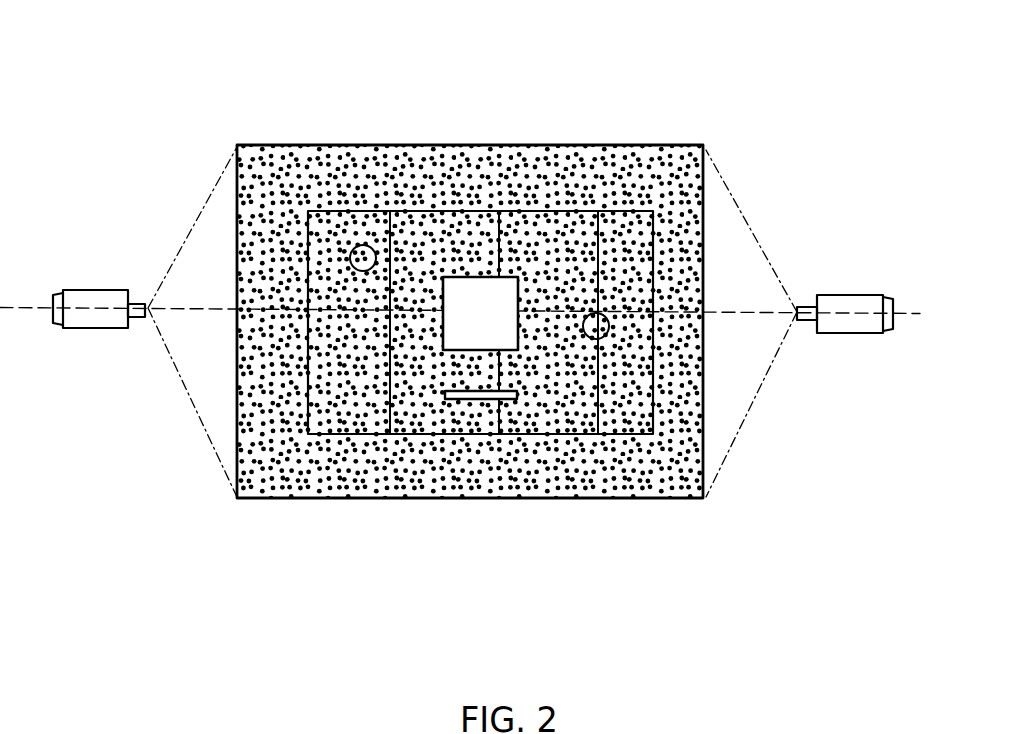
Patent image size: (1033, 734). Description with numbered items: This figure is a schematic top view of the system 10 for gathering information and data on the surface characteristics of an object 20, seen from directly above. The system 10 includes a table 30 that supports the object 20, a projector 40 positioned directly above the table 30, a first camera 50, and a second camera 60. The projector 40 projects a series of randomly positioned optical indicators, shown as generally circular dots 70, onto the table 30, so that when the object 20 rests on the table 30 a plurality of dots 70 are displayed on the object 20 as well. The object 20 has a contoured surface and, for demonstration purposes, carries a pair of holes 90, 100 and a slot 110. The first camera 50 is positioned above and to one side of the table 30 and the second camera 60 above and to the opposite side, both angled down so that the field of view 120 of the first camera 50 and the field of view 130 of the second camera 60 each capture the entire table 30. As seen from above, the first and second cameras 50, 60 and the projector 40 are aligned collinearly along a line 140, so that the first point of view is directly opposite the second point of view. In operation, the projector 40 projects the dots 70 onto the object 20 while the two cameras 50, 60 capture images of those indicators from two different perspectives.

The system 10 is at (263, 128).
The object 20 is at (334, 413).
The table 30 is at (695, 483).
The projector 40 is at (498, 340).
The first camera 50 is at (103, 300).
The second camera 60 is at (853, 302).
The dots 70 is at (488, 453).
The hole 90 is at (363, 258).
The hole 100 is at (596, 326).
The slot 110 is at (517, 395).
The field of view 120 is at (198, 355).
The field of view 130 is at (728, 345).
The line 140 is at (913, 313).